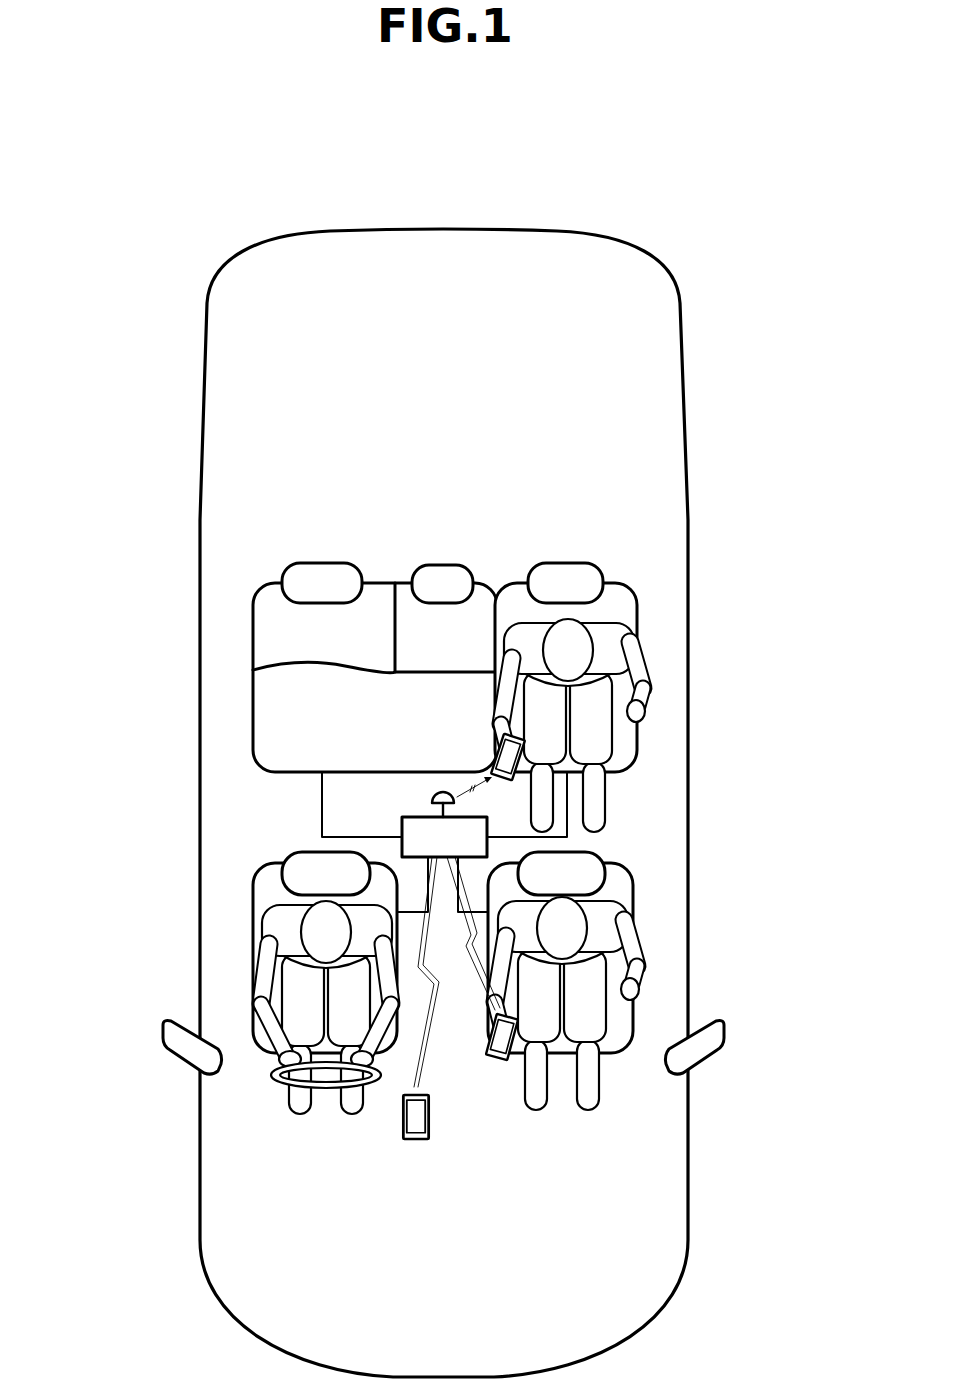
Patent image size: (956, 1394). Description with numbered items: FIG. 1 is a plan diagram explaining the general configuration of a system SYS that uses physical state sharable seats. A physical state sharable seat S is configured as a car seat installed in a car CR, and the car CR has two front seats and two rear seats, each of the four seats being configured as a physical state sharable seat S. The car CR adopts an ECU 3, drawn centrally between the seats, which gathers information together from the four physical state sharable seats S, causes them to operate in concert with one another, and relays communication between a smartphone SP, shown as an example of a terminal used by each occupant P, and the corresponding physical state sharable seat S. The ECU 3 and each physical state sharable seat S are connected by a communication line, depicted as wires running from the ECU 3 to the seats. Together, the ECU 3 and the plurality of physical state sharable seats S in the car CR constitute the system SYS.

The system using physical state sharable seats SYS is at (138, 432).
The car CR is at (690, 470).
The physical state sharable seat S is at (253, 604).
The occupant P is at (645, 650).
The smartphone SP is at (496, 757).
The ECU (electronic control unit) 3 is at (402, 824).